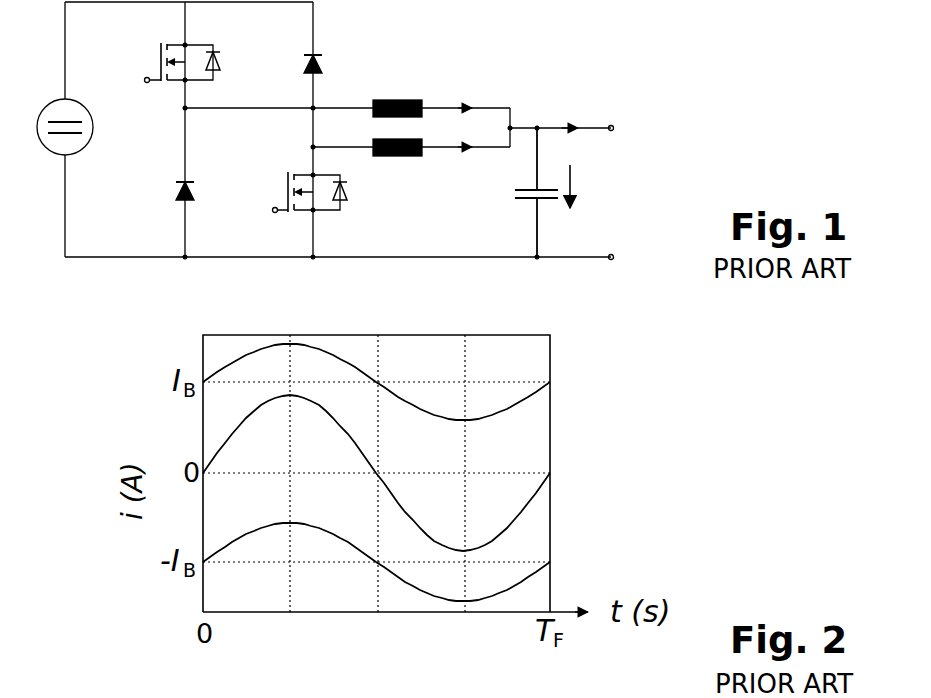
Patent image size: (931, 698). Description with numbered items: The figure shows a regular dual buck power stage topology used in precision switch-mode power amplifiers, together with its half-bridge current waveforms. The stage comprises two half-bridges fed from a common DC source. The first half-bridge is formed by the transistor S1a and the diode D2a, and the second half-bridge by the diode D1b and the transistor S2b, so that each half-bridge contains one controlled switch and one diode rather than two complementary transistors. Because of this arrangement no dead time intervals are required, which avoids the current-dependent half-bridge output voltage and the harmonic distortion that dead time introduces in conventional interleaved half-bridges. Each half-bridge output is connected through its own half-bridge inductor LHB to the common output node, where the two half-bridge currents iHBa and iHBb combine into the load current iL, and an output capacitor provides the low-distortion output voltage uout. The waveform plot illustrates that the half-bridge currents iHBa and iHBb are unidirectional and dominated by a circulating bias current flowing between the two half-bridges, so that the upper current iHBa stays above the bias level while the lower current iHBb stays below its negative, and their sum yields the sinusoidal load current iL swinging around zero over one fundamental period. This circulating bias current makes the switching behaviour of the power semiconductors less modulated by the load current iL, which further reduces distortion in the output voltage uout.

In FIG. 1, the transistor of first half-bridge S1a is at (153, 66).
In FIG. 1, the diode of second half-bridge D1b is at (280, 66).
In FIG. 1, the diode of first half-bridge D2a is at (151, 193).
In FIG. 1, the transistor of second half-bridge S2b is at (280, 193).
In FIG. 1, the half-bridge inductor LHB is at (397, 126).
In FIG. 1, the half-bridge current of first half-bridge iHBa is at (468, 78).
In FIG. 2, the half-bridge current of first half-bridge iHBa is at (376, 382).
In FIG. 1, the half-bridge current of second half-bridge iHBb is at (468, 173).
In FIG. 2, the half-bridge current of second half-bridge iHBb is at (376, 562).
In FIG. 1, the load current iL is at (573, 99).
In FIG. 2, the load current iL is at (376, 469).
In FIG. 1, the output voltage uout is at (577, 192).